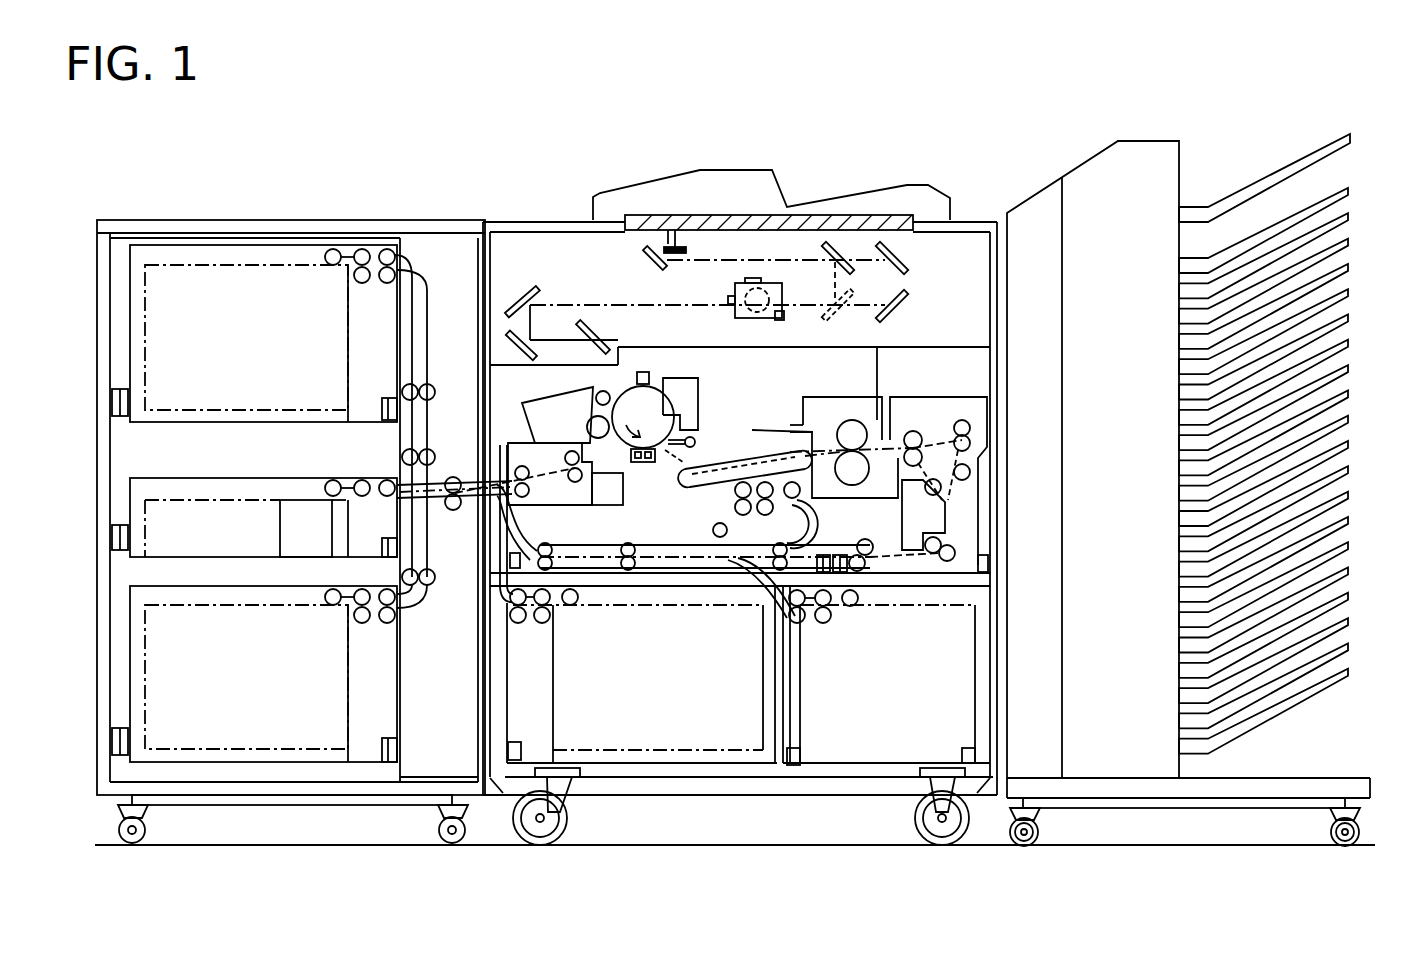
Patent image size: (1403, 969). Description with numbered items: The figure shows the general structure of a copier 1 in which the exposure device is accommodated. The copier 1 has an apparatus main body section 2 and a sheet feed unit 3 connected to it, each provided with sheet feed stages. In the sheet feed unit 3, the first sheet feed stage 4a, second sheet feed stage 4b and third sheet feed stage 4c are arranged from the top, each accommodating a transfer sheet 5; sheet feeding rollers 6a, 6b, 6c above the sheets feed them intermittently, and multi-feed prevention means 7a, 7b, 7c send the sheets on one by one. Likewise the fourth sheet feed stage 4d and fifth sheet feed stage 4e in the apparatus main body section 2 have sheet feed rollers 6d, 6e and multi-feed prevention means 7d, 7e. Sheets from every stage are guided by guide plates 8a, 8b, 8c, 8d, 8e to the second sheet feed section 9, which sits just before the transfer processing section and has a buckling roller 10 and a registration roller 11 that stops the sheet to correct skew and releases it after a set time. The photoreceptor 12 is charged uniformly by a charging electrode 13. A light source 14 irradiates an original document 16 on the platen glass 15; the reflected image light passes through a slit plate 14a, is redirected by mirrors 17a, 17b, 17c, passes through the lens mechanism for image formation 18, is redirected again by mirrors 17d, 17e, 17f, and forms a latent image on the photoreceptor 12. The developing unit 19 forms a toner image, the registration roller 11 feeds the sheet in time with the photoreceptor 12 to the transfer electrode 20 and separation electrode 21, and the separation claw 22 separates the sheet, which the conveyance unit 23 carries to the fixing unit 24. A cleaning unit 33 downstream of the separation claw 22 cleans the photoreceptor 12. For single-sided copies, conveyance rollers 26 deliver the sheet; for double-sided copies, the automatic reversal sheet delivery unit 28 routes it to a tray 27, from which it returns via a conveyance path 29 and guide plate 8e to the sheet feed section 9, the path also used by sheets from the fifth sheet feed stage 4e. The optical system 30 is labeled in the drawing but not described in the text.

The copier 1 is at (721, 123).
The apparatus main body section 2 is at (538, 220).
The sheet feed unit 3 is at (304, 212).
The first sheet feed stage 4a is at (181, 243).
The second sheet feed stage 4b is at (178, 476).
The third sheet feed stage 4c is at (173, 583).
The fourth sheet feed stage 4d is at (652, 767).
The fifth sheet feed stage 4e is at (855, 770).
The transfer sheet 5 is at (233, 262).
The sheet feeding roller 6a is at (322, 255).
The sheet feeding roller 6b is at (330, 485).
The sheet feeding roller 6c is at (322, 598).
The sheet feed roller 6d is at (570, 606).
The sheet feed roller 6e is at (860, 604).
The multi-feed prevention means 7a is at (350, 280).
The multi-feed prevention means 7b is at (357, 515).
The multi-feed prevention means 7c is at (358, 622).
The multi-feed prevention means 7d is at (542, 623).
The multi-feed prevention means 7e is at (826, 623).
The guide plate 8a is at (410, 343).
The guide plate 8b is at (398, 527).
The guide plate 8c is at (417, 607).
The guide plate 8d is at (484, 610).
The guide plate 8e is at (522, 522).
The second sheet feed section 9 is at (557, 440).
The buckling roller 10 is at (513, 465).
The registration roller 11 is at (566, 490).
The photoreceptor 12 is at (668, 397).
The charging electrode 13 is at (650, 375).
The light source 14 is at (643, 250).
The slit plate 14a is at (667, 246).
The platen glass 15 is at (905, 230).
The original document 16 is at (888, 215).
The mirror 17a is at (648, 263).
The mirror 17b is at (905, 258).
The mirror 17c is at (905, 310).
The mirror 17d is at (518, 295).
The mirror 17e is at (507, 332).
The mirror 17f is at (603, 338).
The lens mechanism for image formation 18 is at (756, 276).
The developing unit 19 is at (552, 391).
The transfer electrode 20 is at (640, 463).
The separation electrode 21 is at (720, 485).
The separation claw 22 is at (694, 442).
The conveyance unit 23 is at (765, 550).
The fixing unit 24 is at (858, 391).
The conveyance rollers 26 is at (955, 425).
The tray 27 is at (610, 542).
The automatic reversal sheet delivery unit 28 is at (980, 501).
The conveyance path 29 is at (652, 570).
The optical system 30 is at (800, 307).
The cleaning unit 33 is at (705, 393).